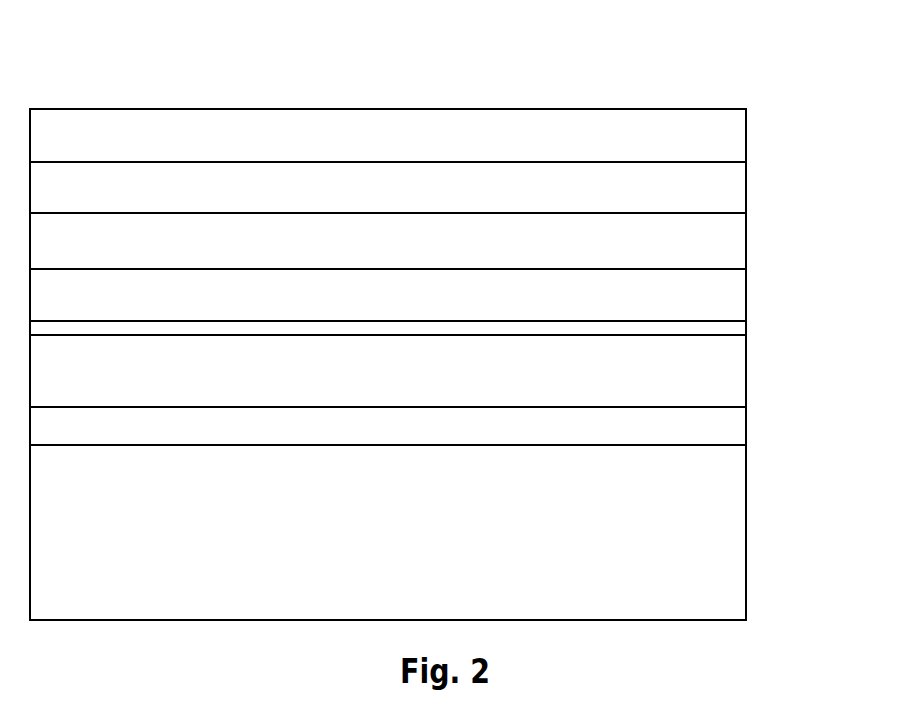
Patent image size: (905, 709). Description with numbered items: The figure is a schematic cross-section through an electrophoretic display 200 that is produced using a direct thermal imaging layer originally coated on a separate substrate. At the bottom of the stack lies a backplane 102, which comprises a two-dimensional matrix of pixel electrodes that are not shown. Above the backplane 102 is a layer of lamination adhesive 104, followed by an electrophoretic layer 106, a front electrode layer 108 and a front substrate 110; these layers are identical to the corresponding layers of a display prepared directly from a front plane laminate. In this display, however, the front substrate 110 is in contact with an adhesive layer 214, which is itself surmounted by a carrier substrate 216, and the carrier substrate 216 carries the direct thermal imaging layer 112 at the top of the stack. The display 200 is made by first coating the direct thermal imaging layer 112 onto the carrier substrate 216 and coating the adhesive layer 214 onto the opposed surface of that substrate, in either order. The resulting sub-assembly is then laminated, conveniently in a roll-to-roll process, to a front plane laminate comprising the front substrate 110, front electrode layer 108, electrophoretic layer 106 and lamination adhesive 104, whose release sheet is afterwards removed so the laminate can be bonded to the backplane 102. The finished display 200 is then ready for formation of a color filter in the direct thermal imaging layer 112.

The display 200 is at (513, 109).
The backplane 102 is at (682, 568).
The layer of lamination adhesive 104 is at (682, 430).
The electrophoretic layer 106 is at (687, 380).
The front electrode layer 108 is at (687, 321).
The front substrate 110 is at (689, 289).
The adhesive layer 214 is at (655, 240).
The carrier substrate 216 is at (687, 192).
The direct thermal imaging layer 112 is at (685, 150).